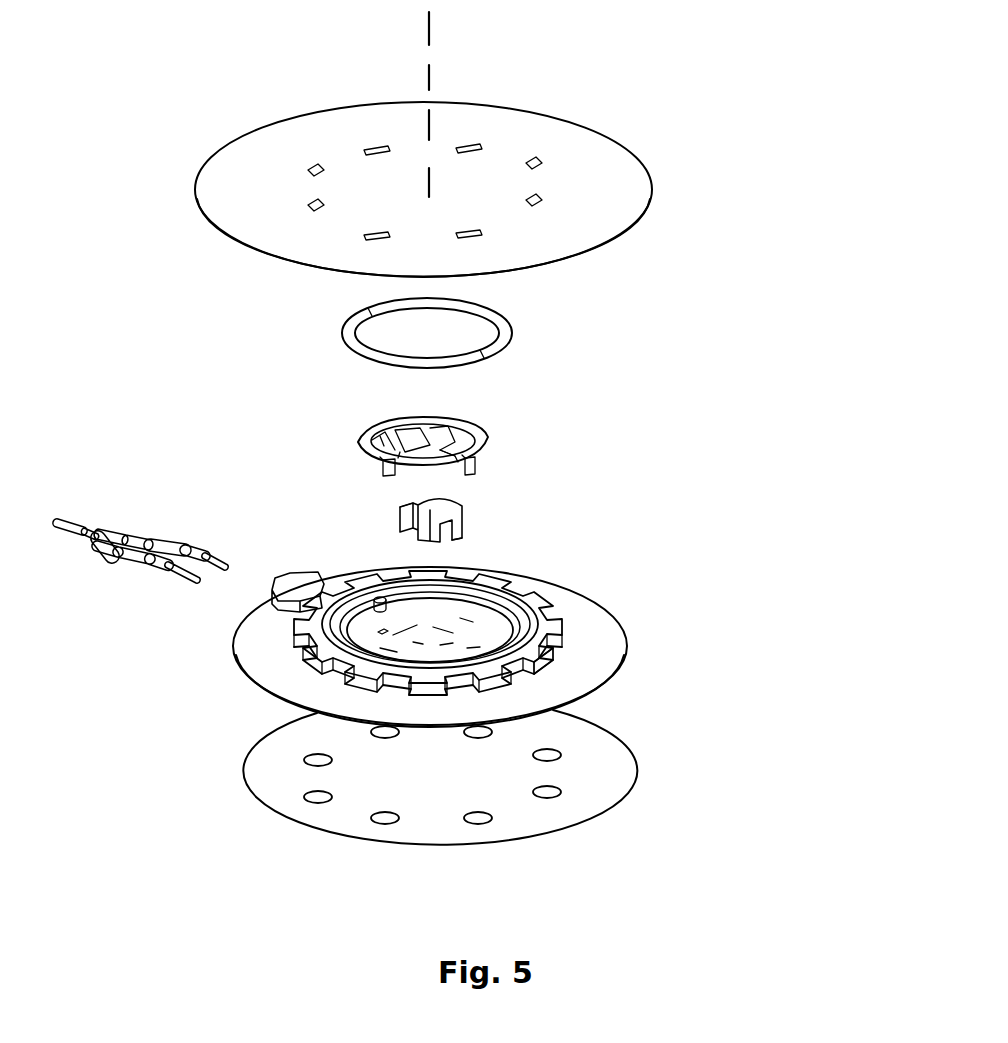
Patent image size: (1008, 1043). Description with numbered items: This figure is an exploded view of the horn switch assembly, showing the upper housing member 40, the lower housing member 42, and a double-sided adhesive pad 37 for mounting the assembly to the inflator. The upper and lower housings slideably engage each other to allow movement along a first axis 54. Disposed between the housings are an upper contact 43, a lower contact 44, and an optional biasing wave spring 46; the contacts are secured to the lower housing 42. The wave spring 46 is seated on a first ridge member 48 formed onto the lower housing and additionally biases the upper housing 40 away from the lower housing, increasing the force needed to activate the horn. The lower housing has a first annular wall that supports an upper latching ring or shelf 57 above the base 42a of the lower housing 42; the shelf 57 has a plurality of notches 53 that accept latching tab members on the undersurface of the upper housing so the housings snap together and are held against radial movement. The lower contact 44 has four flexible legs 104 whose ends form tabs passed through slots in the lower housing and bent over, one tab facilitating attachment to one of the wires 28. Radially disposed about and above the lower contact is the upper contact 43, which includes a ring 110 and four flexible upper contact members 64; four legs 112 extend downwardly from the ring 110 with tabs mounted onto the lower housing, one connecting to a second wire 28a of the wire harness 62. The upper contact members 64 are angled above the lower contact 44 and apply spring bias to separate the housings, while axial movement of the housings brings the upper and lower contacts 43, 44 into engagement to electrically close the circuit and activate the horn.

The first axis 54 is at (425, 30).
The upper housing member 40 is at (668, 177).
The biasing wave spring 46 is at (522, 327).
The upper contact 43 is at (456, 429).
The ring 110 is at (367, 437).
The legs 112 is at (385, 468).
The upper contact members 64 is at (453, 445).
The lower contact 44 is at (467, 510).
The flexible legs 104 is at (412, 510).
The wire harness 62 is at (163, 546).
The second wire 28a is at (182, 540).
The wire 28 is at (157, 570).
The lower housing member 42 is at (507, 632).
The base 42a is at (273, 657).
The notches 53 is at (543, 603).
The first ridge member 48 is at (517, 622).
The upper latching ring or shelf 57 is at (562, 648).
The double-sided adhesive pad 37 is at (646, 767).